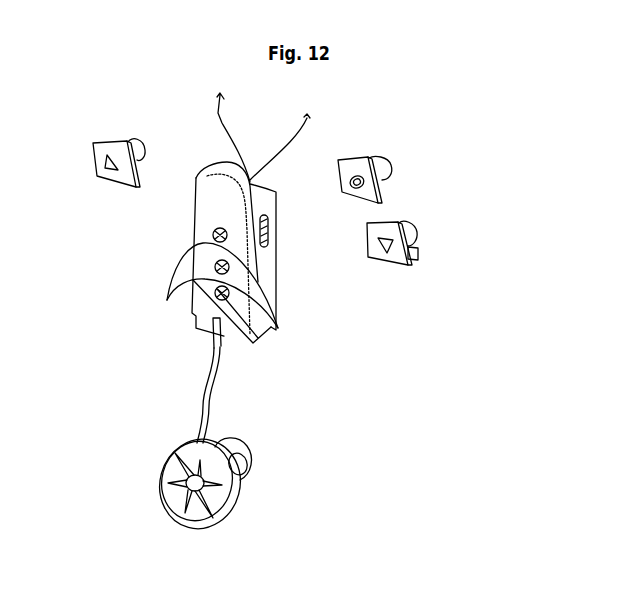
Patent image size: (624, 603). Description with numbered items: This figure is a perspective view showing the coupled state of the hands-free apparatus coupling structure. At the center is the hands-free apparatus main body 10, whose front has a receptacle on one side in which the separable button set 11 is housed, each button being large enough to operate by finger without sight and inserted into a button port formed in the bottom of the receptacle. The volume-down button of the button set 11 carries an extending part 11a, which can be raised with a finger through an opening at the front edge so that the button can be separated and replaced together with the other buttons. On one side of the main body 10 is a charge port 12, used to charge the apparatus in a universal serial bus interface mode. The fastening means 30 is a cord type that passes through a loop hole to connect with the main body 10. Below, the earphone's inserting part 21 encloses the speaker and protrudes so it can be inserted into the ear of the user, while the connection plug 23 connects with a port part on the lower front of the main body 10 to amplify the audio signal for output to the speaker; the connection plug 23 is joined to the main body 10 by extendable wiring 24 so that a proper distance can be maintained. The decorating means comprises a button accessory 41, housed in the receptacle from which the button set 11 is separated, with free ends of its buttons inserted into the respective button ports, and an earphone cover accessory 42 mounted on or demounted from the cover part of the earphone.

The hands-free apparatus main body 10 is at (199, 173).
The button set 11 is at (382, 266).
The extending part 11a is at (414, 264).
The charge port 12 is at (279, 196).
The inserting part 21 is at (238, 446).
The connection plug 23 is at (203, 342).
The extendable wiring 24 is at (196, 417).
The fastening means 30 is at (216, 107).
The button accessory 41 is at (192, 304).
The earphone cover accessory 42 is at (238, 517).